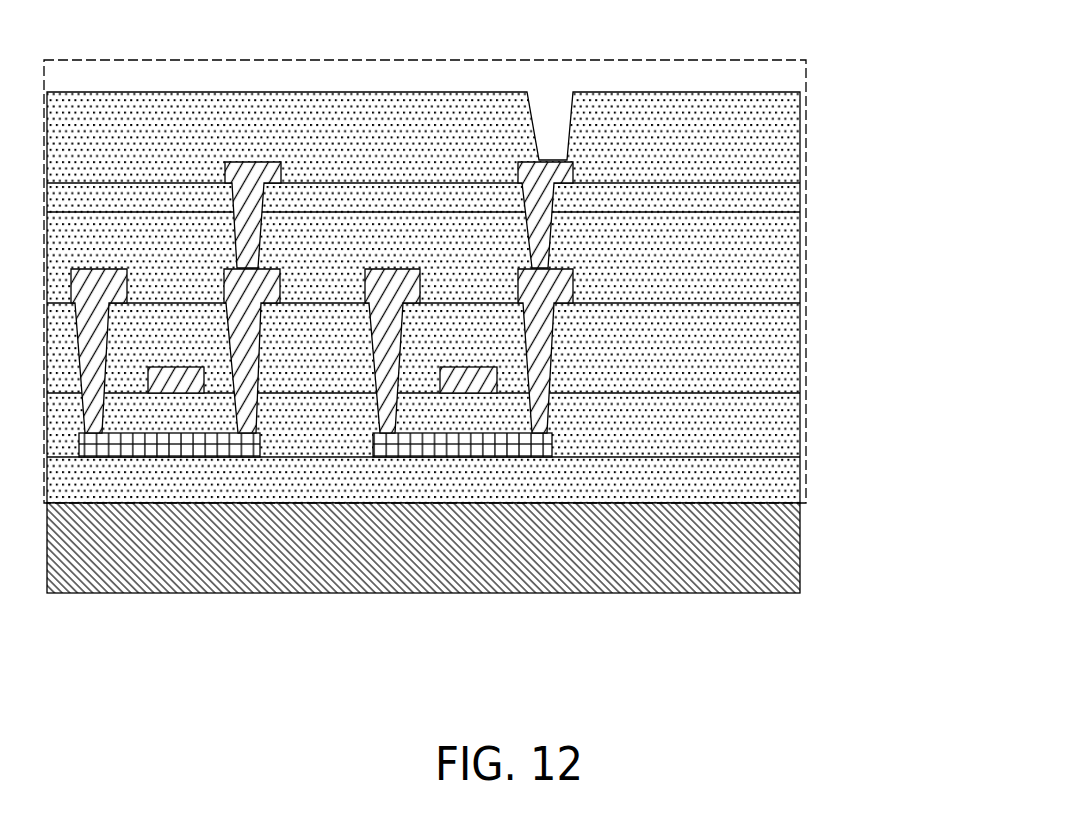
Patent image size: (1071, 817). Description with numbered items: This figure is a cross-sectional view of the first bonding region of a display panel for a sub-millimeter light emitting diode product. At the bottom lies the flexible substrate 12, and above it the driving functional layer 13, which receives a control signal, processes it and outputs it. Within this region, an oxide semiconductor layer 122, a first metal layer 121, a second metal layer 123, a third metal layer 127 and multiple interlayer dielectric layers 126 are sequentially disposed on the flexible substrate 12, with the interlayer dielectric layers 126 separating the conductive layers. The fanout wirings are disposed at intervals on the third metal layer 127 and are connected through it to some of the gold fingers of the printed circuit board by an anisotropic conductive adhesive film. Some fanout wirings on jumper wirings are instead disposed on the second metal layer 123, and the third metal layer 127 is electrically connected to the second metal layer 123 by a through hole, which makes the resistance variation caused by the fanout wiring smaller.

The flexible substrate 12 is at (778, 570).
The driving functional layer 13 is at (678, 62).
The first metal layer 121 is at (180, 385).
The oxide semiconductor layer 122 is at (530, 448).
The second metal layer 123 is at (396, 290).
The interlayer dielectric layers 126 is at (782, 325).
The third metal layer 127 is at (541, 202).